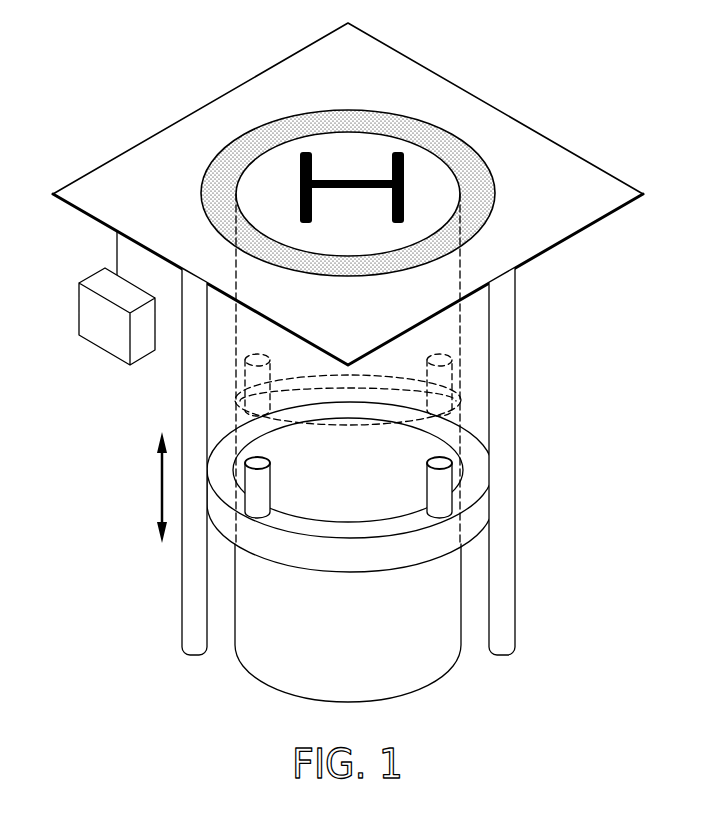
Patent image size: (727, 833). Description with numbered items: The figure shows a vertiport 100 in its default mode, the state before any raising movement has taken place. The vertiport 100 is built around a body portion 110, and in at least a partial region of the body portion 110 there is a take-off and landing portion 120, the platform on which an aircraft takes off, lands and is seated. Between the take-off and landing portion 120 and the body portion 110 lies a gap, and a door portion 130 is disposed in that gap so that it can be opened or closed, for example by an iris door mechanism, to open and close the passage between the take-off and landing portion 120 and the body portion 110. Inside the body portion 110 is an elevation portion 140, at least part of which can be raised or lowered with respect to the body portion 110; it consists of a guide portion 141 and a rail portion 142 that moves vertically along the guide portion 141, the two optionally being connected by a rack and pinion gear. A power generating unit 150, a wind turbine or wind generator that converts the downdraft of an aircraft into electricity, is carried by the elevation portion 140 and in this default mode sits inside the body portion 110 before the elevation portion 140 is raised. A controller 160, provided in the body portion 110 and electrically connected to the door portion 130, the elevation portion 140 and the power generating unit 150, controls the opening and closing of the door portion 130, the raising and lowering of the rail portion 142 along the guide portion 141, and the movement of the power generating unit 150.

The vertiport 100 is at (347, 356).
The body portion 110 is at (162, 168).
The take-off and landing portion 120 is at (335, 148).
The door portion 130 is at (252, 140).
The elevation portion 140 is at (414, 485).
The guide portion 141 is at (507, 398).
The rail portion 142 is at (480, 455).
The power generating unit 150 is at (442, 480).
The controller 160 is at (108, 332).